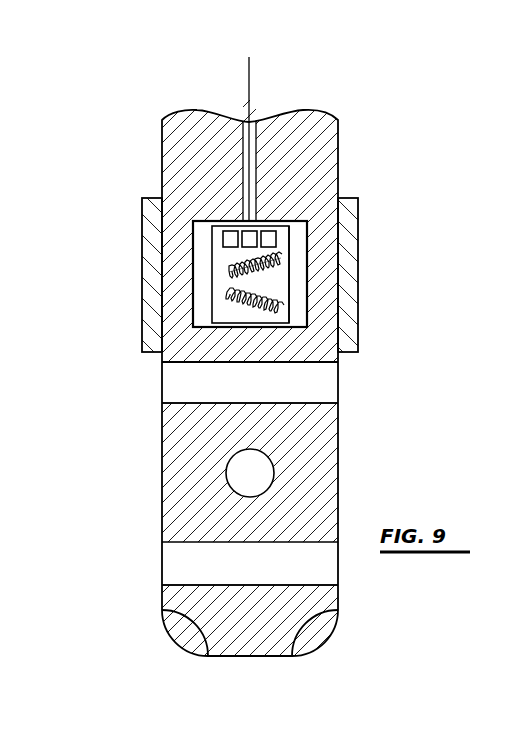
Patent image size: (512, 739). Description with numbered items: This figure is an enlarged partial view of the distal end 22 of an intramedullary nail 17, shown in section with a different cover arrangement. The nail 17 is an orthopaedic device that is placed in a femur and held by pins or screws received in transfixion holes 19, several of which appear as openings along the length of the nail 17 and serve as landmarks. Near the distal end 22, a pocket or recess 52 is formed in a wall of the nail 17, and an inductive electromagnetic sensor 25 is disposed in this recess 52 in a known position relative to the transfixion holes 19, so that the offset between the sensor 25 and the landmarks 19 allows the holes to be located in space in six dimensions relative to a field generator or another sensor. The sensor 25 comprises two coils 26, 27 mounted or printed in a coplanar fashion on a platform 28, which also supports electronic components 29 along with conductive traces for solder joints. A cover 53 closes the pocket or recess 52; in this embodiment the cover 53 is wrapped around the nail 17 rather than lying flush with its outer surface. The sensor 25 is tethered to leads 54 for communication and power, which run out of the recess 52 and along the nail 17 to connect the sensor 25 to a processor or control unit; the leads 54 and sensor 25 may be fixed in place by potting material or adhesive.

The intramedullary nail 17 is at (128, 285).
The transfixion holes 19 is at (209, 403).
The distal end 22 is at (277, 657).
The inductive electromagnetic sensor 25 is at (295, 247).
The coil 26 is at (242, 305).
The coil 27 is at (240, 265).
The platform 28 is at (210, 265).
The electronic components 29 is at (228, 223).
The pocket or recess 52 is at (305, 310).
The cover 53 is at (142, 322).
The leads 54 is at (250, 105).